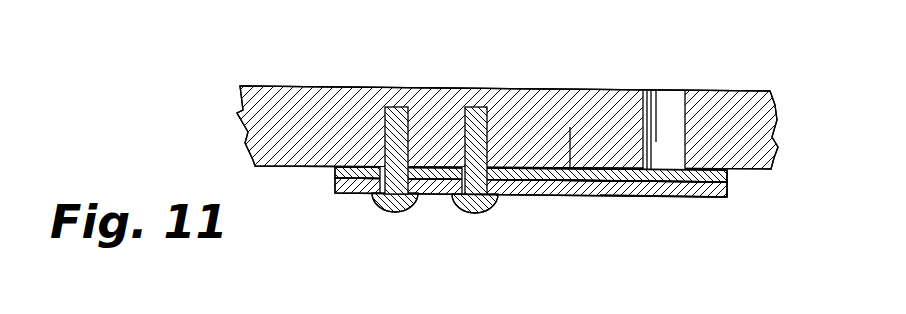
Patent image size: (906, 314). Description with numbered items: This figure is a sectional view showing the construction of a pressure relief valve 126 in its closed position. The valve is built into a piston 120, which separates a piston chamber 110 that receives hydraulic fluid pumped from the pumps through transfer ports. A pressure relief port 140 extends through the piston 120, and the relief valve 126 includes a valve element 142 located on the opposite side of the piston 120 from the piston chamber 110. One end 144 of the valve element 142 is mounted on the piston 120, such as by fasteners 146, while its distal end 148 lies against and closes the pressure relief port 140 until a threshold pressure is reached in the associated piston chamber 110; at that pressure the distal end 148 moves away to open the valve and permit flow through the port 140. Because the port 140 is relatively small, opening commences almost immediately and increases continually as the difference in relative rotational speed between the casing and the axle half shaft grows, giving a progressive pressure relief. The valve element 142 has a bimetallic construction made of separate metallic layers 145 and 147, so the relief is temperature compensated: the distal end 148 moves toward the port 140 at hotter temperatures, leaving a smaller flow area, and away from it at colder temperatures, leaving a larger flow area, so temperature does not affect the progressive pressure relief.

The piston chamber 110 is at (319, 68).
The piston 120 is at (238, 110).
The pressure relief port 140 is at (667, 110).
The metallic layer 145 is at (570, 168).
The valve element 142 is at (568, 203).
The valve element end 144 is at (355, 194).
The fasteners 146 is at (400, 213).
The metallic layer 147 is at (602, 196).
The pressure relief valve 126 is at (652, 222).
The distal end 148 is at (713, 198).